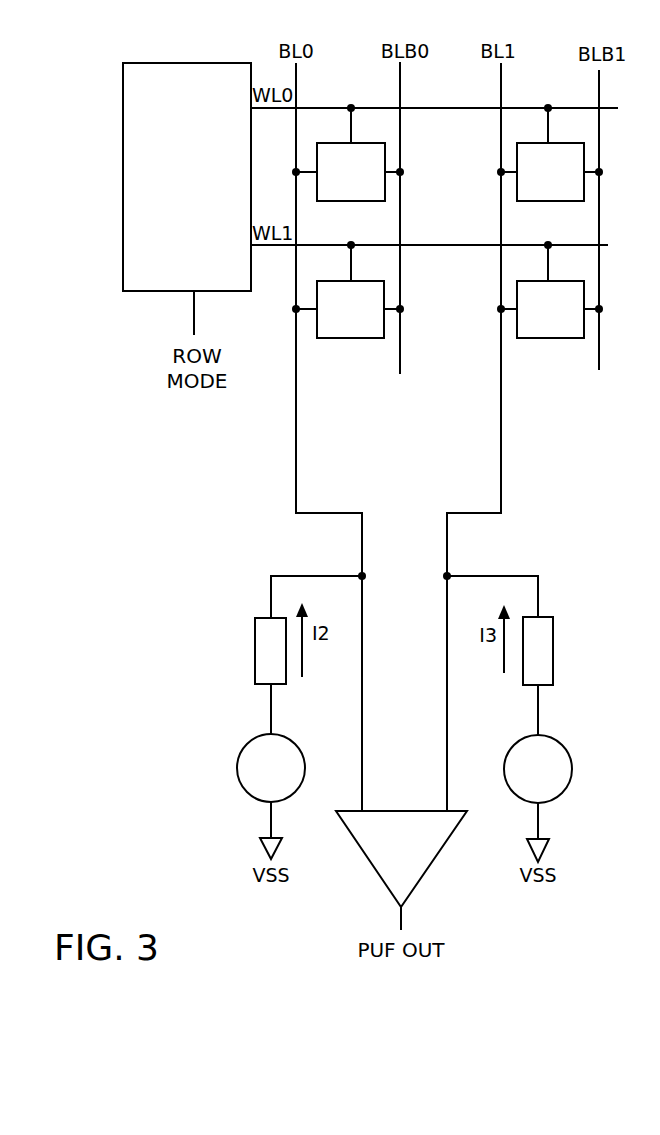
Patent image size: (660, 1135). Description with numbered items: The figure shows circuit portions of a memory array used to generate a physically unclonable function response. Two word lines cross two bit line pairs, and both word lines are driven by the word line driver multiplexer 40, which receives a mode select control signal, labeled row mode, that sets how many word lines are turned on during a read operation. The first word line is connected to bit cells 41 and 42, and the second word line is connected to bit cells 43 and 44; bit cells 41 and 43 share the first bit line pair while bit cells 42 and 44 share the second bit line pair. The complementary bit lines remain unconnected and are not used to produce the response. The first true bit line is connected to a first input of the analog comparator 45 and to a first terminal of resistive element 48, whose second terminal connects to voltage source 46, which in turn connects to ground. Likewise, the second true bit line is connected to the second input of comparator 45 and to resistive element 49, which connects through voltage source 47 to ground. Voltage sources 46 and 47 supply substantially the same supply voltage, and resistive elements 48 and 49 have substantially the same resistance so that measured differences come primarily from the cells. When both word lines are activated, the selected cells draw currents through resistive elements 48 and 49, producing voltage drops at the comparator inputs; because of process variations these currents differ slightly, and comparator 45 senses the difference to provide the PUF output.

The word line driver multiplexer 40 is at (178, 258).
The bit cell 41 is at (339, 182).
The bit cell 42 is at (538, 182).
The bit cell 43 is at (339, 319).
The bit cell 44 is at (538, 319).
The analog comparator 45 is at (389, 867).
The voltage source 46 is at (238, 762).
The voltage source 47 is at (569, 755).
The resistive element 48 is at (255, 645).
The resistive element 49 is at (553, 634).